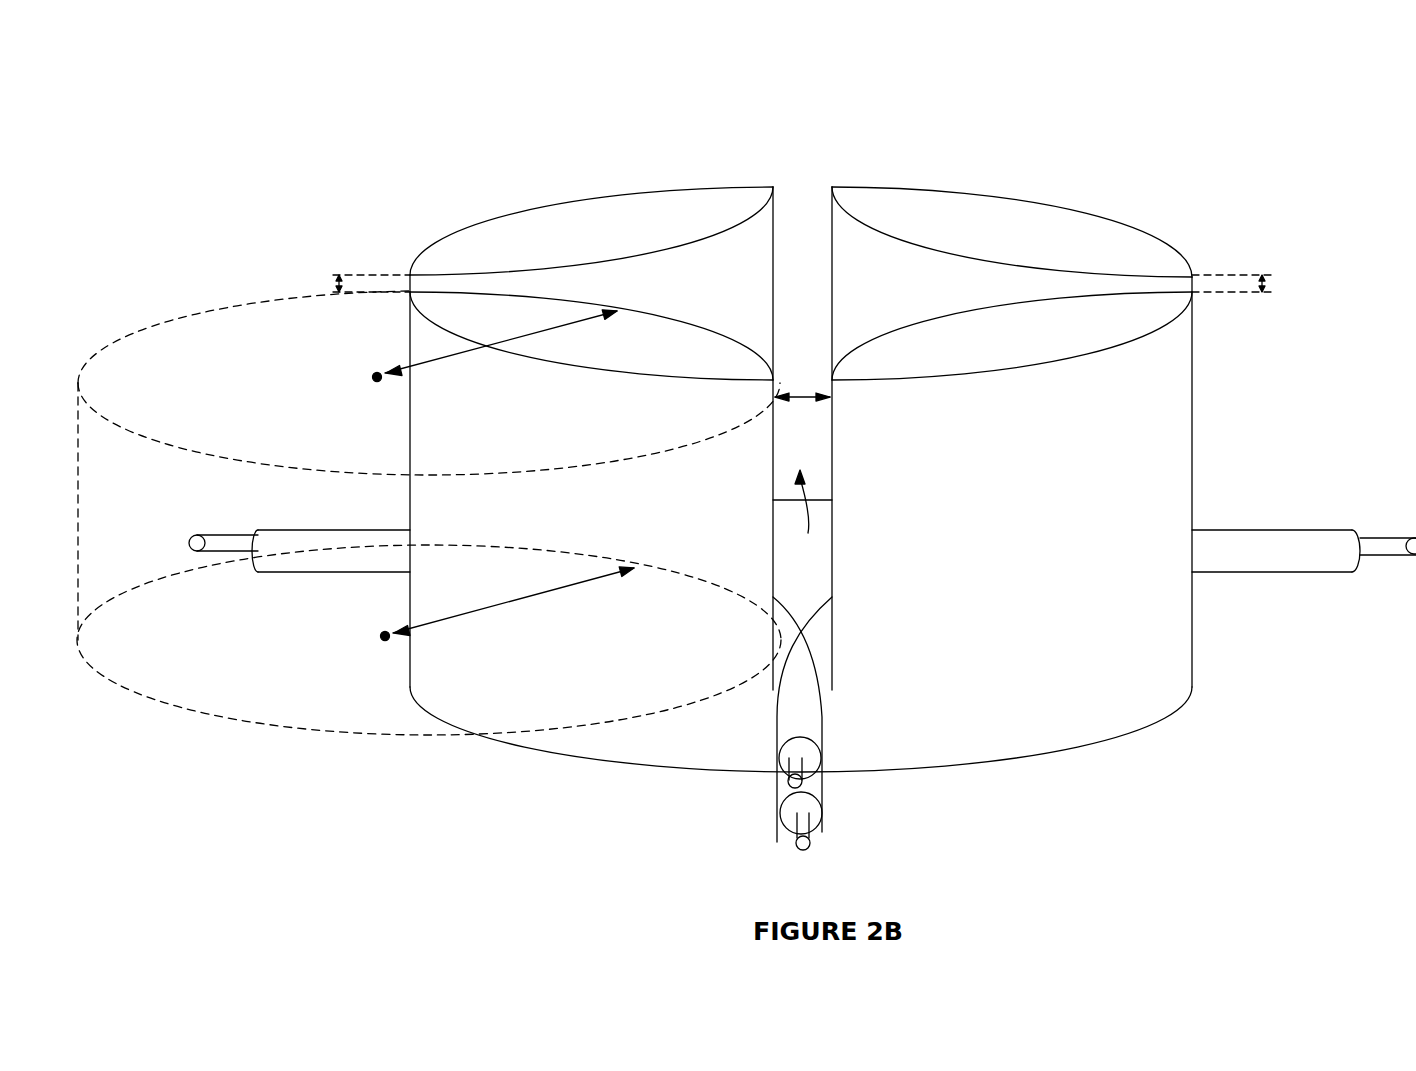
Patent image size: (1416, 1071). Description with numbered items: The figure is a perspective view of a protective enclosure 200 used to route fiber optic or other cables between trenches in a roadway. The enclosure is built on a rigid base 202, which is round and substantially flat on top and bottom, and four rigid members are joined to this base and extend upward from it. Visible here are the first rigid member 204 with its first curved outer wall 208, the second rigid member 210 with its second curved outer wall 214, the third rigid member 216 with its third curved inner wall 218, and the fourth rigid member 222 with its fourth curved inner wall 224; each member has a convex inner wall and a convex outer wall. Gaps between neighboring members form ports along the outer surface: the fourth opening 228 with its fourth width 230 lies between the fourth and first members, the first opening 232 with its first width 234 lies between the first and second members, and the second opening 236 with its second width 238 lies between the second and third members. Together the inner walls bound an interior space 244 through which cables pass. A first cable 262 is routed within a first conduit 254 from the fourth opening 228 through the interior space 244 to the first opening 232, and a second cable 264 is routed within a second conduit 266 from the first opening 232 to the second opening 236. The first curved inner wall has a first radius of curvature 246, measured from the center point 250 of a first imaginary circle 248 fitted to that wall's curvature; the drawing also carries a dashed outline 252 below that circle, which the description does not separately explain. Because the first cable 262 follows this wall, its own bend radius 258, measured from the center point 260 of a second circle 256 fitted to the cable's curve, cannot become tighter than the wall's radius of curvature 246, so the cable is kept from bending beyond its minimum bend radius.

The protective enclosure 200 is at (1246, 126).
The rigid base 202 is at (1048, 762).
The first rigid member 204 is at (668, 325).
The first curved outer wall 208 is at (433, 452).
The second rigid member 210 is at (920, 335).
The second curved outer wall 214 is at (1175, 410).
The third rigid member 216 is at (1010, 218).
The third curved inner wall 218 is at (860, 262).
The fourth rigid member 222 is at (613, 215).
The fourth curved inner wall 224 is at (750, 265).
The fourth opening 228 is at (398, 282).
The fourth width 230 is at (338, 282).
The first opening 232 is at (809, 517).
The first width 234 is at (800, 393).
The second opening 236 is at (1210, 283).
The second width 238 is at (1265, 284).
The interior space 244 is at (800, 205).
The first radius of curvature 246 is at (503, 343).
The first imaginary circle 248 is at (205, 300).
The center point 250 is at (372, 376).
The second field region 252 is at (190, 705).
The first conduit 254 is at (328, 530).
The second circle 256 is at (598, 553).
The bend radius 258 is at (510, 605).
The center point 260 is at (381, 636).
The first cable 262 is at (217, 530).
The second cable 264 is at (1385, 537).
The second conduit 266 is at (1245, 528).